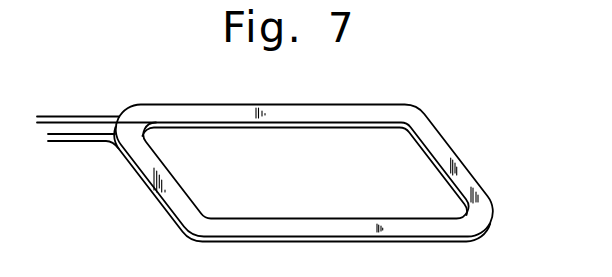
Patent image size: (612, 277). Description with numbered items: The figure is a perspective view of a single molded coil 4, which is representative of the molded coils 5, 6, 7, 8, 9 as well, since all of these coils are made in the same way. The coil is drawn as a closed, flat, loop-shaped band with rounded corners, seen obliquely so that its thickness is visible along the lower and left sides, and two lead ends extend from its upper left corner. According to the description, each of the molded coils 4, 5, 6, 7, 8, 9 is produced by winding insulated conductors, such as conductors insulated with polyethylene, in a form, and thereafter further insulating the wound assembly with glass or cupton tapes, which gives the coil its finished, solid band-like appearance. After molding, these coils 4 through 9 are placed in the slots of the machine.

The molded coil 4 is at (286, 97).
The molded coil 5 is at (265, 147).
The molded coil 6 is at (265, 172).
The molded coil 7 is at (265, 172).
The molded coil 8 is at (265, 172).
The molded coil 9 is at (265, 172).